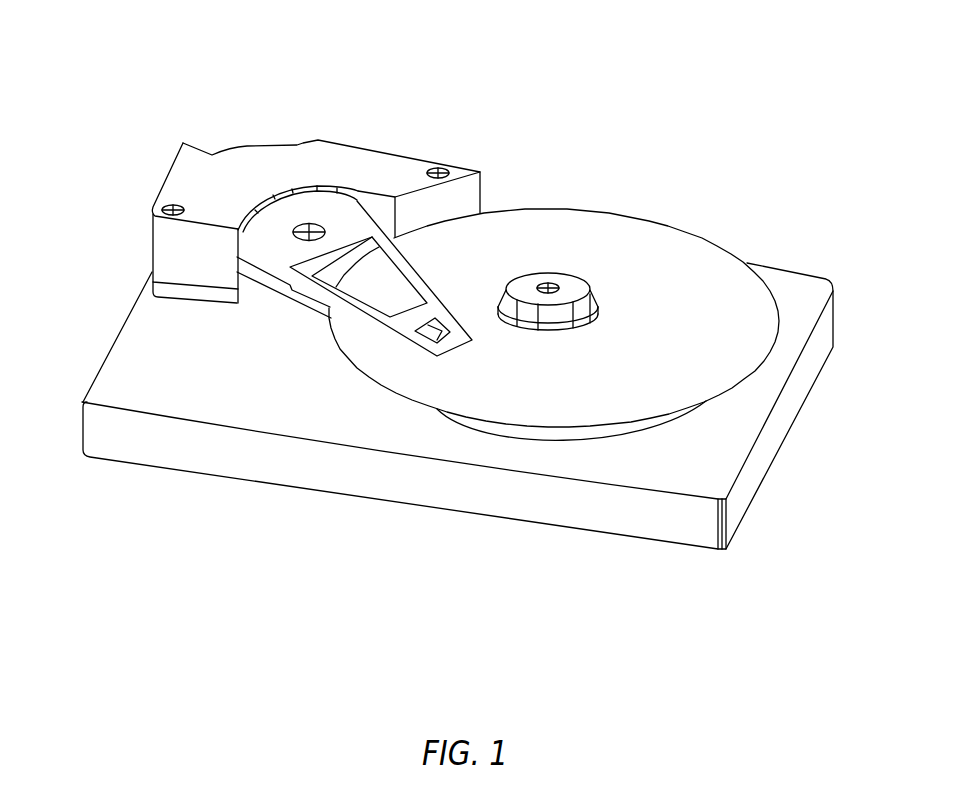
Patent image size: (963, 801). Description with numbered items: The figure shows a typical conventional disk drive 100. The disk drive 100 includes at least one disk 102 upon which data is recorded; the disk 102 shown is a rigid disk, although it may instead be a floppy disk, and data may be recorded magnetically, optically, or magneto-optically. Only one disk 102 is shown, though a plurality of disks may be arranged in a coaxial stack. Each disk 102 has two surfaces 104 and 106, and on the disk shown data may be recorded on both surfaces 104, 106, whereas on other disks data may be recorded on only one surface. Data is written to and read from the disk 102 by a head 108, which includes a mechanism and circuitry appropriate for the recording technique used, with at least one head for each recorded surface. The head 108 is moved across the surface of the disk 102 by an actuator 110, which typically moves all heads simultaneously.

The disk drive 100 is at (560, 128).
The disk 102 is at (630, 215).
The surface 104 is at (713, 280).
The surface 106 is at (708, 397).
The head 108 is at (432, 332).
The actuator 110 is at (262, 247).